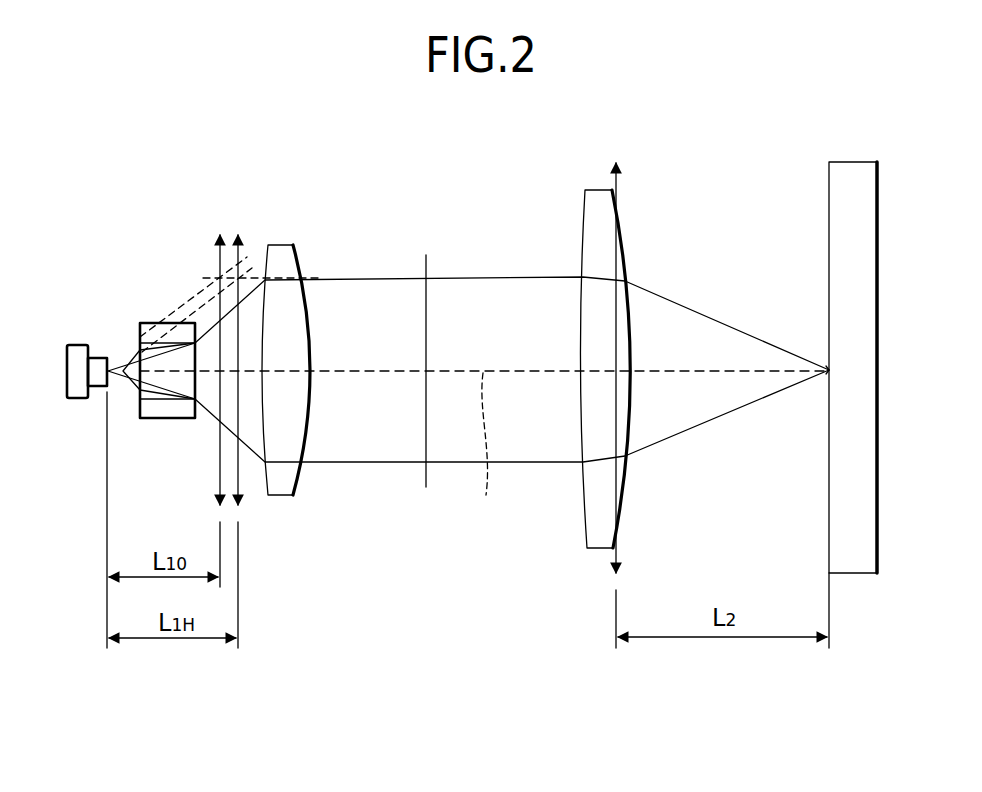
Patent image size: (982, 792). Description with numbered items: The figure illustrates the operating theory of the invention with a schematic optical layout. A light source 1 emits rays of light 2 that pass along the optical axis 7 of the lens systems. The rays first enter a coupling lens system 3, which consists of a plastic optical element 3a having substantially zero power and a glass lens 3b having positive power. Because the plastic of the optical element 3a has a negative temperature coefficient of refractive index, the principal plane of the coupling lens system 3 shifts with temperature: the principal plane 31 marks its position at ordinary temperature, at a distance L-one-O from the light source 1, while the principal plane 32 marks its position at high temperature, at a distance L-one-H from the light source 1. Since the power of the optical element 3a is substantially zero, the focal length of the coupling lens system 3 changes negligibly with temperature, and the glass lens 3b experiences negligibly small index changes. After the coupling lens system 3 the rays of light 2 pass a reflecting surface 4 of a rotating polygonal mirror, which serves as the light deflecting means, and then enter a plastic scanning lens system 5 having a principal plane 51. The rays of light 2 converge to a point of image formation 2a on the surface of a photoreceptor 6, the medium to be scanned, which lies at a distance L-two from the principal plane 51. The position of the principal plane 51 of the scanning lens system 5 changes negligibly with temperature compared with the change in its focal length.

The light source 1 is at (98, 352).
The rays of light 2 is at (390, 277).
The point of image formation 2a is at (825, 366).
The coupling lens system 3 is at (252, 391).
The plastic optical element 3a is at (145, 322).
The glass lens 3b is at (302, 264).
The principal plane at ordinary temperature 31 is at (215, 252).
The principal plane at high temperature 32 is at (244, 252).
The reflecting surface 4 is at (427, 265).
The plastic scanning lens system 5 is at (593, 190).
The principal plane of the scanning lens system 51 is at (618, 185).
The photoreceptor 6 is at (829, 192).
The optical axis 7 is at (484, 448).